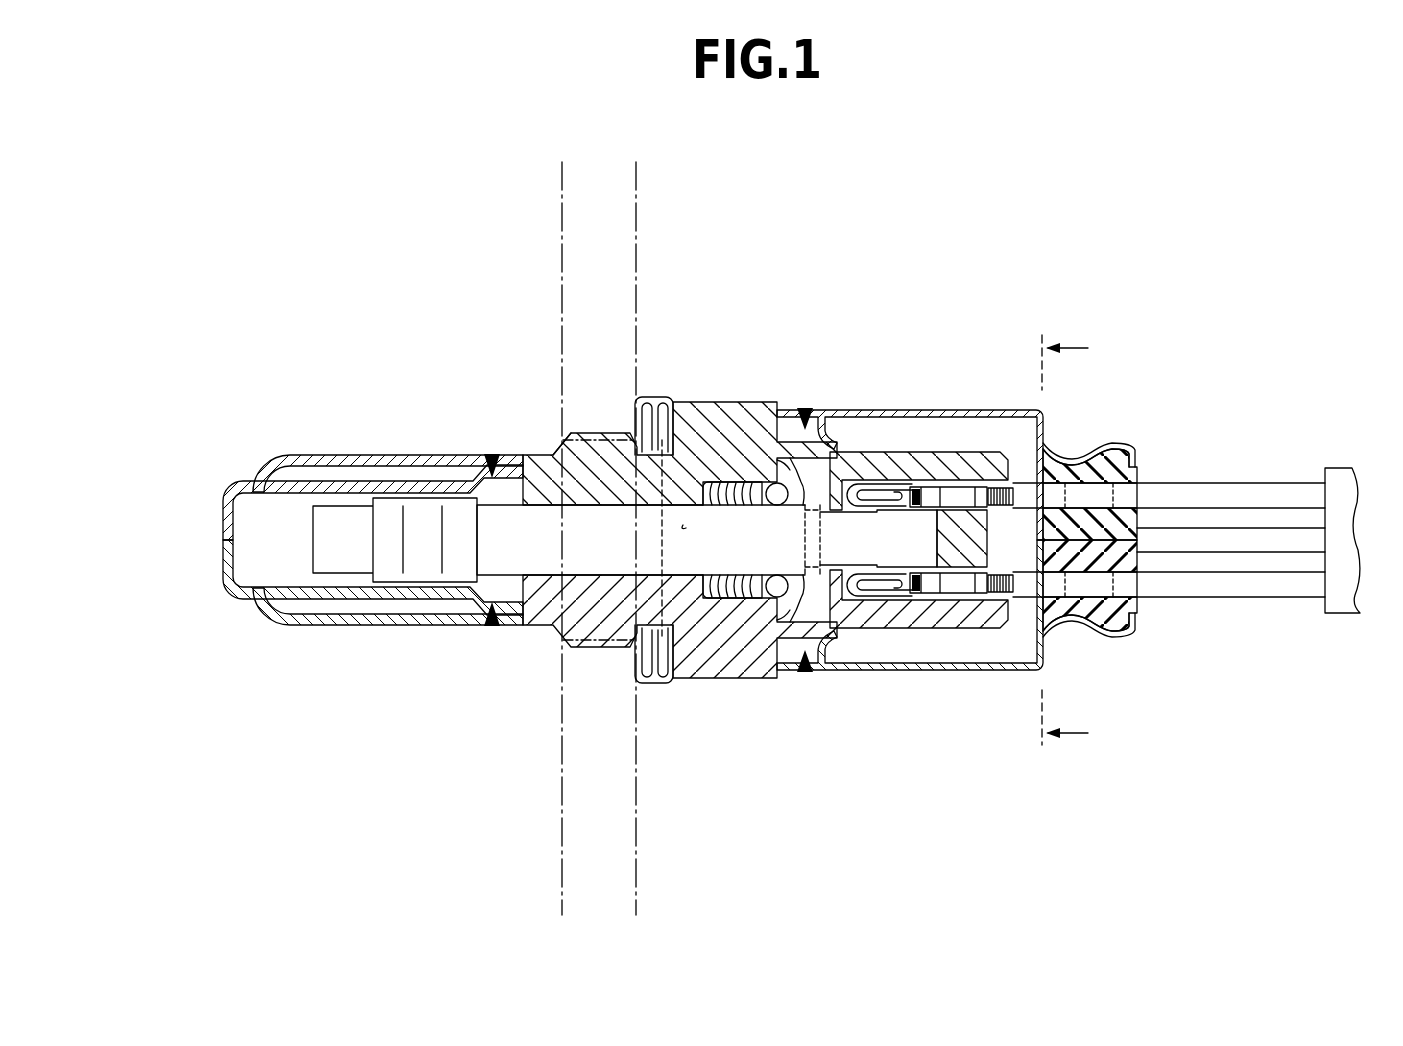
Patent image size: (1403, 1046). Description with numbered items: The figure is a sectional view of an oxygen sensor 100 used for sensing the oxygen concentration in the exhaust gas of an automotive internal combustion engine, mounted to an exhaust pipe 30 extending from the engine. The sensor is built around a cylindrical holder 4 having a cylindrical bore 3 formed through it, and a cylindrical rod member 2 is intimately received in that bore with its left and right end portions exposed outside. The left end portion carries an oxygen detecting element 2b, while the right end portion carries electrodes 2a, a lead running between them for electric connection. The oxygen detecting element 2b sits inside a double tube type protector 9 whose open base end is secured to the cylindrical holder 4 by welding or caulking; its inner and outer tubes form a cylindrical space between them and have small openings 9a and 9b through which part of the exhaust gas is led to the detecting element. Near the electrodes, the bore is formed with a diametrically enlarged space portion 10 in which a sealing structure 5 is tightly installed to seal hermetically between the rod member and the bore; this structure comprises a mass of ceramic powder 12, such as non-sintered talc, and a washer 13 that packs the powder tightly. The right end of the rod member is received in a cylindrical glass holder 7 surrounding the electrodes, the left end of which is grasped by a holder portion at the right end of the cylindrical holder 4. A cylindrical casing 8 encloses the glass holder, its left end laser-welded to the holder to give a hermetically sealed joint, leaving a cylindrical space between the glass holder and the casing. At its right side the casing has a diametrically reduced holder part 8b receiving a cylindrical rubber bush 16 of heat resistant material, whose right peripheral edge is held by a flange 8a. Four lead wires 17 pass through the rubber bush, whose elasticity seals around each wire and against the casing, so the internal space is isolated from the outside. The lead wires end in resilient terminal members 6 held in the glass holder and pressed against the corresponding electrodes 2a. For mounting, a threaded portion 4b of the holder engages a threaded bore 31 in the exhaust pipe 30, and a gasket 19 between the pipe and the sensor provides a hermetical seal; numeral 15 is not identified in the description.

The oxygen sensor 100 is at (1009, 315).
The cylindrical rod member 2 is at (686, 552).
The electrodes 2a is at (846, 484).
The oxygen detecting element 2b is at (459, 448).
The cylindrical bore 3 is at (683, 525).
The cylindrical holder 4 is at (757, 670).
The threaded portion 4b is at (580, 655).
The sealing structure 5 is at (762, 409).
The terminal members 6 is at (884, 484).
The cylindrical glass holder 7 is at (975, 628).
The cylindrical casing 8 is at (1012, 668).
The flange 8a is at (1137, 458).
The holder part 8b is at (1088, 633).
The double tube type protector 9 is at (390, 620).
The small openings 9a is at (441, 480).
The small openings 9b is at (310, 462).
The diametrically enlarged space portion 10 is at (716, 480).
The ceramic powder 12 is at (740, 480).
The washer 13 is at (772, 482).
The terminal 15 is at (906, 488).
The cylindrical rubber bush 16 is at (1078, 466).
The lead wires 17 is at (1233, 583).
The gasket 19 is at (645, 400).
The exhaust pipe 30 is at (562, 203).
The threaded bore 31 is at (553, 452).